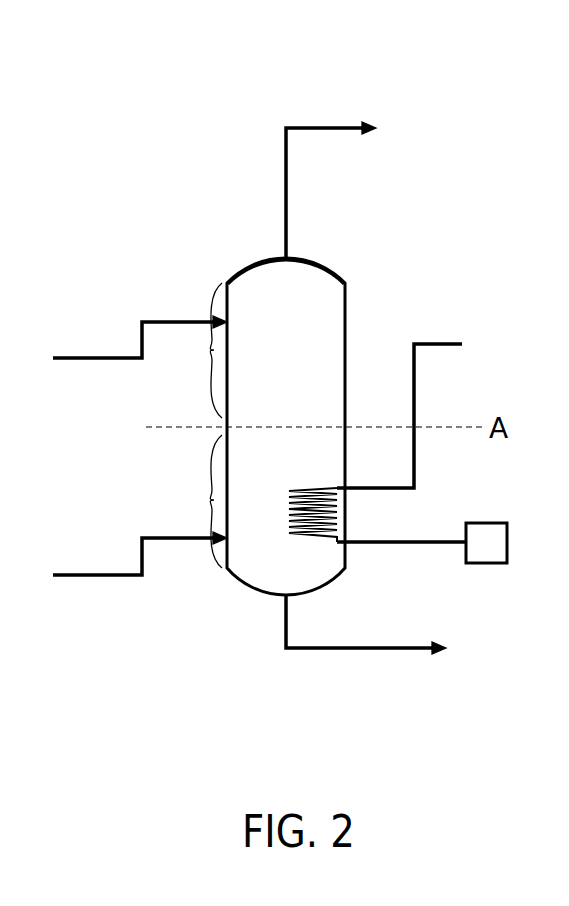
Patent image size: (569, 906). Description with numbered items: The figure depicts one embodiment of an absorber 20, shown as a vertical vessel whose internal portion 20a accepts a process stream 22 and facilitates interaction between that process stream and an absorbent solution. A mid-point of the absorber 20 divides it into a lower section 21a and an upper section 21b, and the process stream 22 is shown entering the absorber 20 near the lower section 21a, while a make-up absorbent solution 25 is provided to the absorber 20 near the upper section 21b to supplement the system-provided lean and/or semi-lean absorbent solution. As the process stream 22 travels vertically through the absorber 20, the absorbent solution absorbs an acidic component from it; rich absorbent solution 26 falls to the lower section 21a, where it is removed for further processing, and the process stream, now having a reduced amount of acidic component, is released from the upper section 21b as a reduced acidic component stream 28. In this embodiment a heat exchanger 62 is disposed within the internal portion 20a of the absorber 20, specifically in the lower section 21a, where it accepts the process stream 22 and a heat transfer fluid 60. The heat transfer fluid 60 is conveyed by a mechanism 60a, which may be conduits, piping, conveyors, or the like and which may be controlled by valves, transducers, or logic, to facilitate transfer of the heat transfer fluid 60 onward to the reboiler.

The absorber 20 is at (378, 328).
The internal portion 20a is at (309, 305).
The lower section 21a is at (188, 501).
The upper section 21b is at (188, 350).
The process stream 22 is at (113, 575).
The make-up absorbent solution 25 is at (112, 358).
The rich absorbent solution 26 is at (288, 622).
The reduced acidic component stream 28 is at (323, 128).
The heat transfer fluid 60 is at (392, 489).
The mechanism 60a is at (487, 564).
The heat exchanger 62 is at (322, 488).